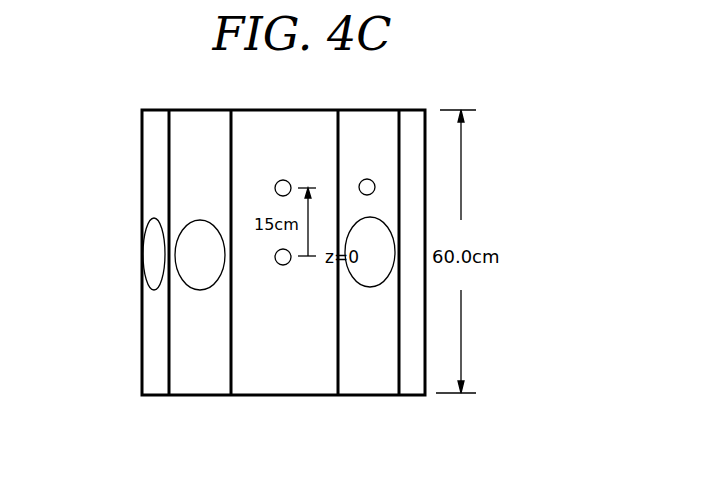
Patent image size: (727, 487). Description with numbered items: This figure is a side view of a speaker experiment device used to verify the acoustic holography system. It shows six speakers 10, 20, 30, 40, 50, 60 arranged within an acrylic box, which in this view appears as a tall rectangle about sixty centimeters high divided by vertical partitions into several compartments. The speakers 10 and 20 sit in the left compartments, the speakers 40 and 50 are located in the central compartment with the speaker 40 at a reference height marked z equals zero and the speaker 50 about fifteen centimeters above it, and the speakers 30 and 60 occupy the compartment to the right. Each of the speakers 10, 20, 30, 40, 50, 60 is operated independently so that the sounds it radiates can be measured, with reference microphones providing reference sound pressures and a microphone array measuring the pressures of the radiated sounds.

The speaker 10 is at (152, 275).
The speaker 20 is at (193, 257).
The speaker 30 is at (372, 283).
The speaker 40 is at (281, 265).
The speaker 50 is at (284, 180).
The speaker 60 is at (367, 179).